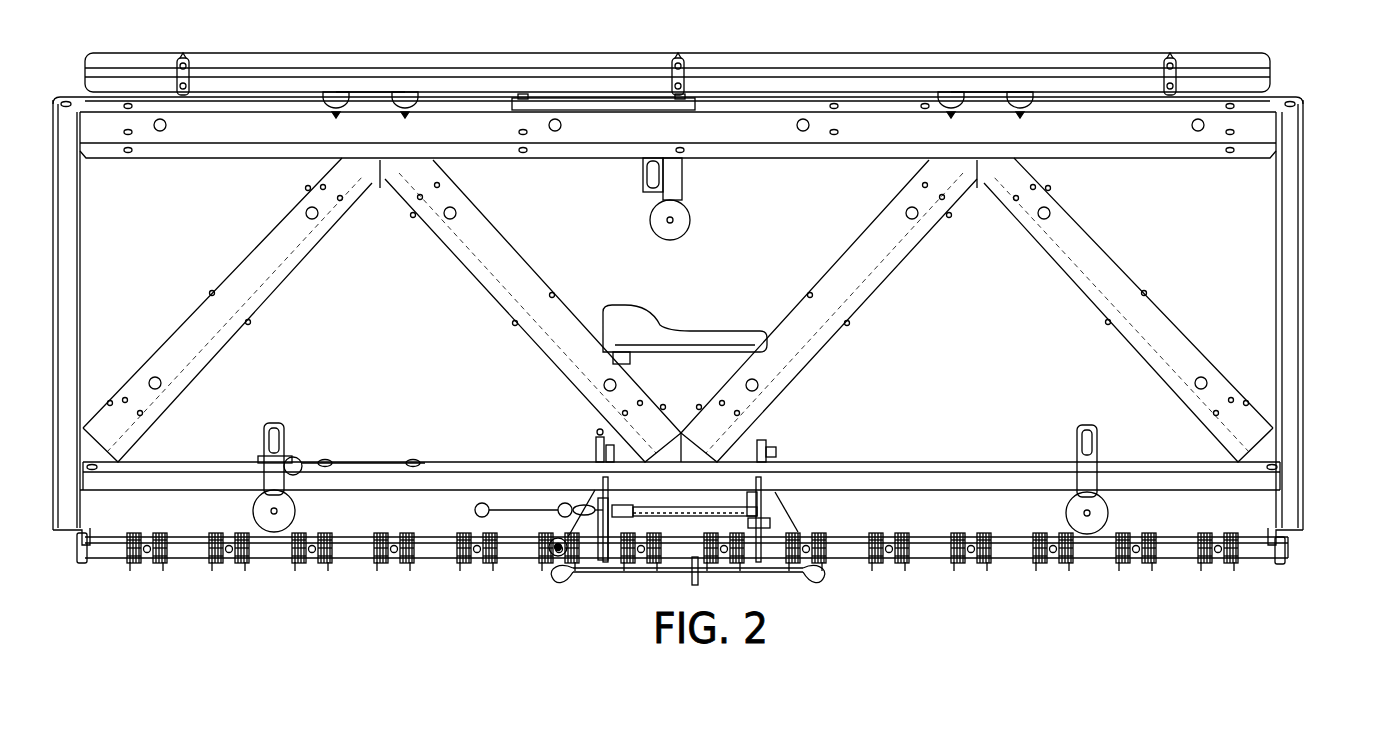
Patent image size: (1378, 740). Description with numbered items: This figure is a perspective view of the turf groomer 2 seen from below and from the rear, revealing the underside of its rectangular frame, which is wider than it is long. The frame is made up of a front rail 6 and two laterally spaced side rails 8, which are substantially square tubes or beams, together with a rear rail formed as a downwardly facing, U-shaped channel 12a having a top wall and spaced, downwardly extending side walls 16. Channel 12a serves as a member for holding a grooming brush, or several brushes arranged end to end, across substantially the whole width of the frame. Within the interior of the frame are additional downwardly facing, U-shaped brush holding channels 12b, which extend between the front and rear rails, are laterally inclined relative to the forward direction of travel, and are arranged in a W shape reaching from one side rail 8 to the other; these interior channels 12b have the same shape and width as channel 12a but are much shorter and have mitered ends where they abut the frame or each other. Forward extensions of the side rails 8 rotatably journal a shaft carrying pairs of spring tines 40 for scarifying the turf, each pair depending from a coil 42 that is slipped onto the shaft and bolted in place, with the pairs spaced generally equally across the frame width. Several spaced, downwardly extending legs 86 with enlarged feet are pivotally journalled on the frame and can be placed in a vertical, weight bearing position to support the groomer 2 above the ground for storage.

The turf groomer 2 is at (715, 315).
The U-shaped channel 12a is at (715, 299).
The interior brush holding channels 12b is at (445, 254).
The side rails 8 is at (68, 264).
The side walls 16 is at (185, 108).
The front rail 6 is at (893, 468).
The legs 86 is at (676, 180).
The spring tines 40 is at (166, 570).
The coil 42 is at (152, 538).